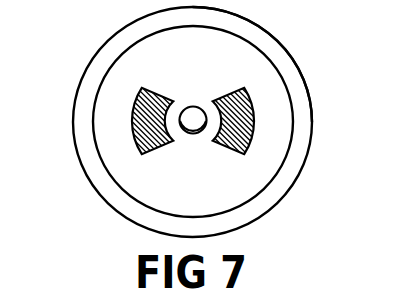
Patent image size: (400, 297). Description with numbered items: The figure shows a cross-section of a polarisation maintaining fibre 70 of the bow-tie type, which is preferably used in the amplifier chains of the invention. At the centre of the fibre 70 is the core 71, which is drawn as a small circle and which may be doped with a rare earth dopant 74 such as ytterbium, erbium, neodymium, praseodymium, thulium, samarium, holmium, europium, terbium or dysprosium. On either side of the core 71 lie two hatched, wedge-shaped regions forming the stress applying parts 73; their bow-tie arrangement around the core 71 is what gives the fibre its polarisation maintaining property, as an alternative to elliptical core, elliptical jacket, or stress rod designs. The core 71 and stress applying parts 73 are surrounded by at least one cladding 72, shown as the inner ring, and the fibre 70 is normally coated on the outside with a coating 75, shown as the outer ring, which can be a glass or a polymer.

The polarisation maintaining fibre 70 is at (90, 185).
The core 71 is at (191, 133).
The cladding 72 is at (268, 187).
The stress applying part 73 is at (132, 125).
The rare earth dopant 74 is at (193, 120).
The coating 75 is at (282, 42).